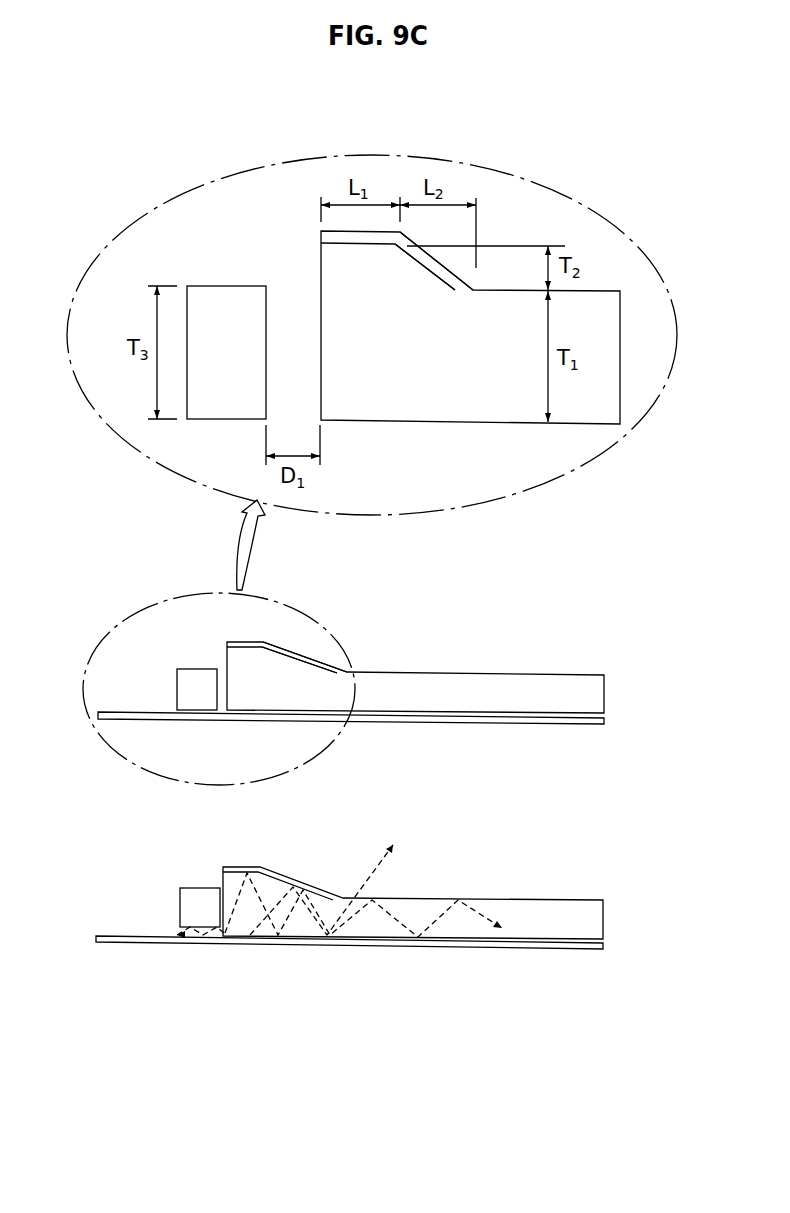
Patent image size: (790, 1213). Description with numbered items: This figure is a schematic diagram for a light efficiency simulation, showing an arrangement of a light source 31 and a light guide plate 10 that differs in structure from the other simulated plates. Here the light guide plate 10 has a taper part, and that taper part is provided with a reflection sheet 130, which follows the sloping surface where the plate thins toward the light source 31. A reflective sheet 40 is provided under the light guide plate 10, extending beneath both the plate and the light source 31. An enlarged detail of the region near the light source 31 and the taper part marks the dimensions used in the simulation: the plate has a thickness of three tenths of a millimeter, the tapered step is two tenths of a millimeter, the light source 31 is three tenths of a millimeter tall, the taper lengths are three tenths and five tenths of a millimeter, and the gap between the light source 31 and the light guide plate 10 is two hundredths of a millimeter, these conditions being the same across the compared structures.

The light guide plate 10 is at (607, 358).
The light source 31 is at (227, 295).
The reflection sheet 130 is at (448, 268).
The reflective sheet 40 is at (475, 725).